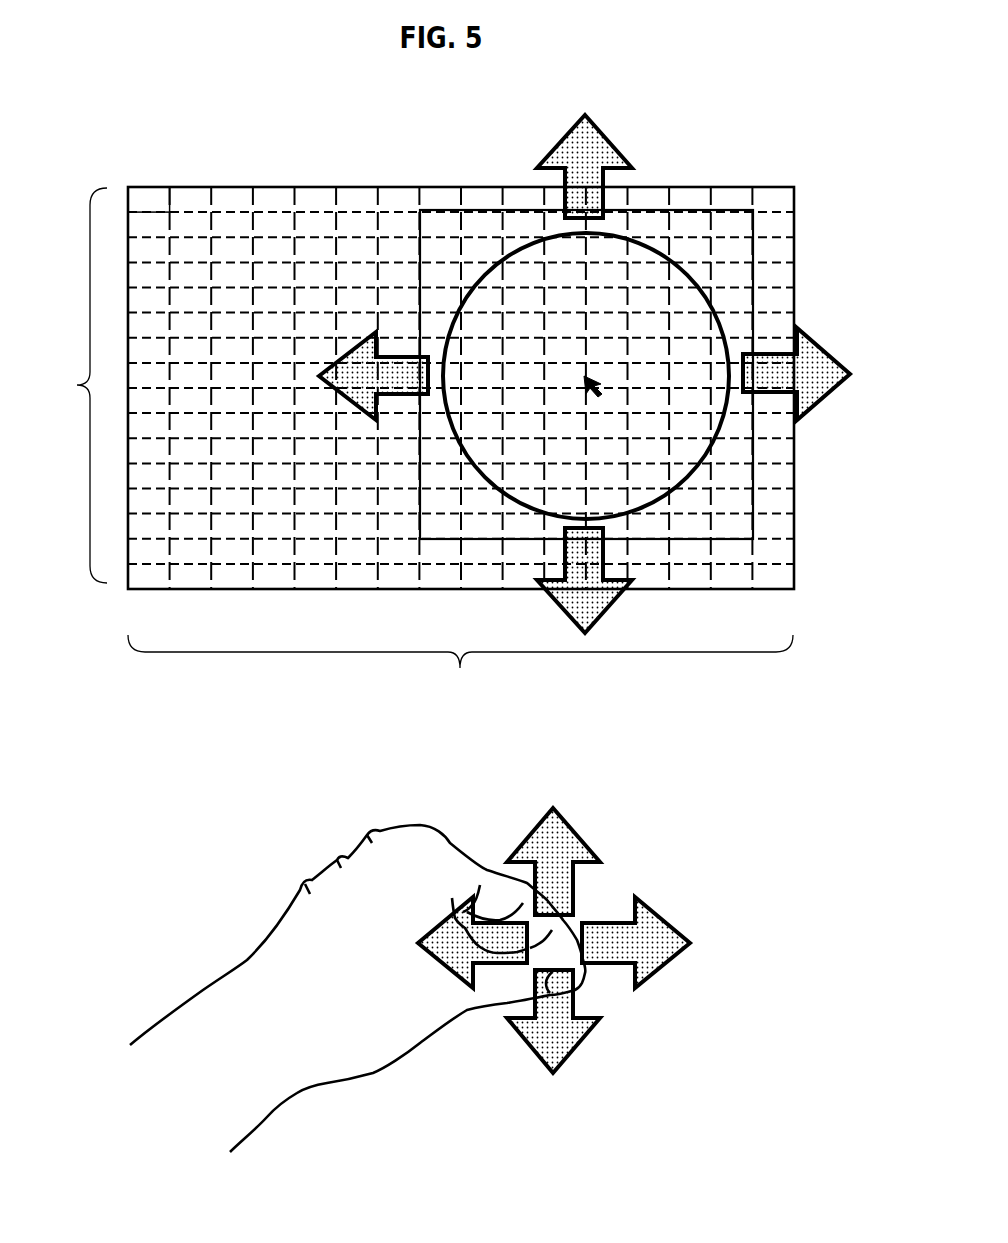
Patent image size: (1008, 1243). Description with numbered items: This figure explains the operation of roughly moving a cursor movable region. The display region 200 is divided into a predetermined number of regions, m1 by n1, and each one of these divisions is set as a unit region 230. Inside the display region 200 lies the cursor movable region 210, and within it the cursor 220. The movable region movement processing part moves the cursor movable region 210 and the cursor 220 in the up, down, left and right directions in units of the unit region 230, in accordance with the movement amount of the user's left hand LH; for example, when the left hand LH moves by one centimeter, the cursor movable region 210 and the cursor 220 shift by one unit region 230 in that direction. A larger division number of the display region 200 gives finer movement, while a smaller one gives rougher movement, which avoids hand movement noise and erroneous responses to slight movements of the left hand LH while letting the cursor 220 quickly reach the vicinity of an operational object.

The display region 200 is at (277, 187).
The cursor movable region 210 is at (660, 245).
The cursor 220 is at (586, 378).
The unit region 230 is at (147, 200).
The division number in one direction m1 is at (73, 385).
The division number in the other direction n1 is at (460, 664).
The left hand LH is at (260, 968).